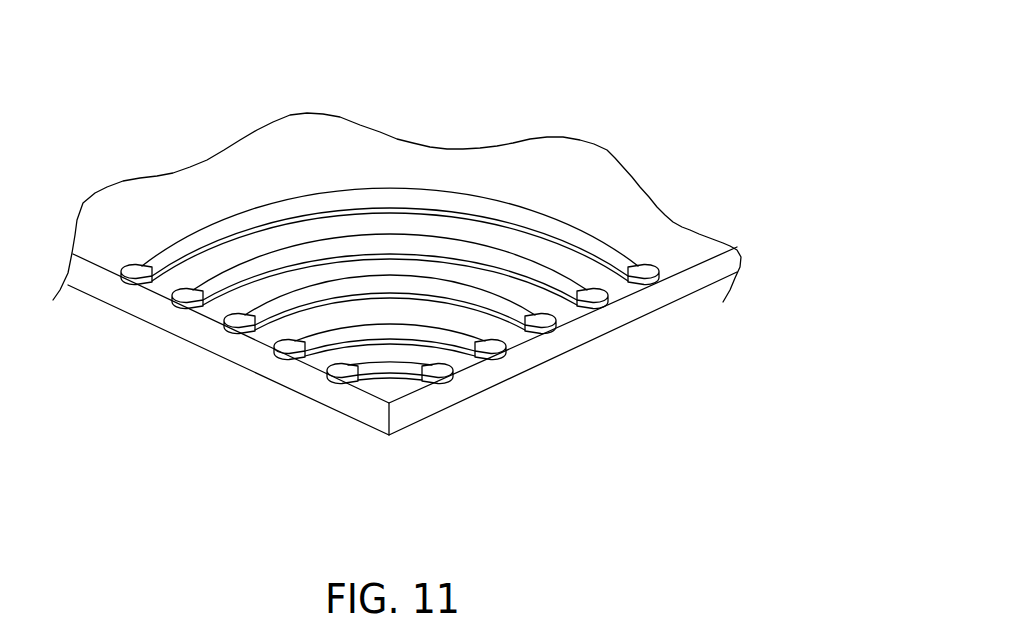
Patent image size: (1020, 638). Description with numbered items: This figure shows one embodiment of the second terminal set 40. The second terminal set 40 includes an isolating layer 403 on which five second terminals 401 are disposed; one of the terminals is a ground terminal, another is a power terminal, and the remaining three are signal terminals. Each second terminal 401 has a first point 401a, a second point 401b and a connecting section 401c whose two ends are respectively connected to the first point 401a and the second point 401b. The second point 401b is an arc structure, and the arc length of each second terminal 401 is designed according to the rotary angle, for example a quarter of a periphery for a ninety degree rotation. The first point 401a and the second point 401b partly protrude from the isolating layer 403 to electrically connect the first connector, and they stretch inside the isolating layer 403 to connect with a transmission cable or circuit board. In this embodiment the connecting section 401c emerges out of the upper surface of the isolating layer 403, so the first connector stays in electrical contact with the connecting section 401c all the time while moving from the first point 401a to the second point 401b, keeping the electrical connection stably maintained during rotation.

The second terminal set 40 is at (662, 97).
The second terminal 401 is at (406, 372).
The first point 401a is at (342, 377).
The second point 401b is at (456, 431).
The connecting section 401c is at (392, 370).
The isolating layer 403 is at (718, 263).